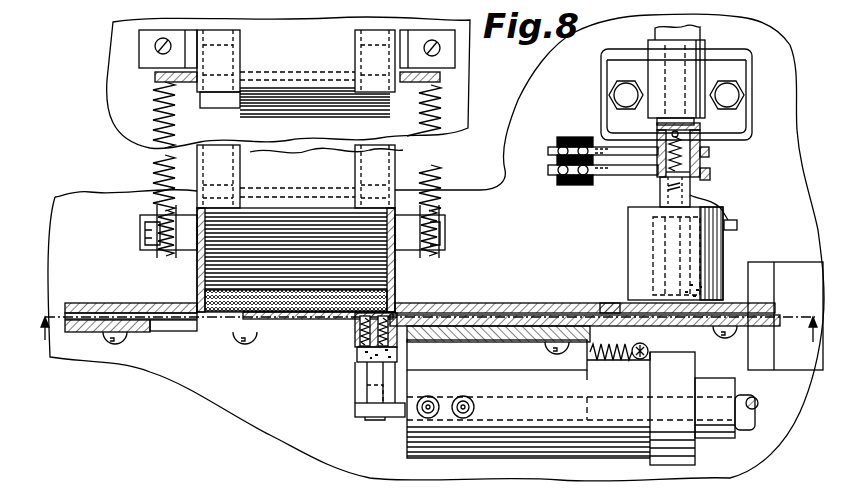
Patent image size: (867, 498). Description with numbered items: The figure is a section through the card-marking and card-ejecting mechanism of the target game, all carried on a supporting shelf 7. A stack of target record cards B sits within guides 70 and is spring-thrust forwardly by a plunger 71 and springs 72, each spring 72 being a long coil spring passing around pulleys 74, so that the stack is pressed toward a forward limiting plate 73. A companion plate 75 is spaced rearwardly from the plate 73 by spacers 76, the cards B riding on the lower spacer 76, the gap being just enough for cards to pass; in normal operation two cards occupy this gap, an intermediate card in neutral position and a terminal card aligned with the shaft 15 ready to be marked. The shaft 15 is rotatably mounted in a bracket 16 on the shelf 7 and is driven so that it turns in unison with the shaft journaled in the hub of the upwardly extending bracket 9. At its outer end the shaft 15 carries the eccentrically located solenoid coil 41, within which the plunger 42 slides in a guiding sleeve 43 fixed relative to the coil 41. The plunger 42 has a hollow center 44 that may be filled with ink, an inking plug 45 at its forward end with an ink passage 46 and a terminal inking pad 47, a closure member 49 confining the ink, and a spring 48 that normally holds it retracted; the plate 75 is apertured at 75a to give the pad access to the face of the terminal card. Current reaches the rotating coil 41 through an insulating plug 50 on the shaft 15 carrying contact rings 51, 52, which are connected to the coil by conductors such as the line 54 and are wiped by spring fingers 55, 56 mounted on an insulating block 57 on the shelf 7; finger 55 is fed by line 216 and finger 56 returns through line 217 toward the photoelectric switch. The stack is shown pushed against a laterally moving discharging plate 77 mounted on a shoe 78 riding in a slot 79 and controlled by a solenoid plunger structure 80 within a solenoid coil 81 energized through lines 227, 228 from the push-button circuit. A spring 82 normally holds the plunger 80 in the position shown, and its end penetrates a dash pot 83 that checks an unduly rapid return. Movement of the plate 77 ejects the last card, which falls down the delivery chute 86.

The supporting shelf 7 is at (112, 115).
The shaft 15 is at (698, 36).
The bracket 16 is at (700, 72).
The solenoid coil 41 is at (630, 229).
The plunger 42 is at (662, 192).
The guiding sleeve 43 is at (708, 160).
The hollow center 44 is at (653, 247).
The inking plug 45 is at (695, 286).
The ink passage 46 is at (705, 274).
The terminal inking pad 47 is at (712, 289).
The spring 48 is at (692, 134).
The closure member 49 is at (668, 187).
The insulating plug 50 is at (709, 150).
The contact ring 51 is at (710, 173).
The contact ring 52 is at (709, 153).
The conductor 54 is at (728, 201).
The spring finger 55 is at (623, 176).
The spring finger 56 is at (600, 146).
The insulating block 57 is at (578, 186).
The guides 70 is at (230, 170).
The plunger 71 is at (296, 72).
The springs 72 is at (170, 148).
The forward limiting plate 73 is at (140, 333).
The pulleys 74 is at (155, 213).
The companion plate 75 is at (90, 303).
The aperture 75a is at (612, 303).
The spacers 76 is at (84, 320).
The discharging plate 77 is at (300, 320).
The actuating member 78 is at (357, 358).
The slot 79 is at (160, 332).
The solenoid plunger structure 80 is at (402, 406).
The solenoid coil 81 is at (550, 445).
The spring 82 is at (610, 360).
The dash pot 83 is at (712, 437).
The delivery chute 86 is at (790, 372).
The line 216 is at (524, 176).
The line 217 is at (550, 151).
The line 227 is at (465, 418).
The line 228 is at (430, 418).
The bracket 9 is at (427, 345).
The record card B is at (300, 117).